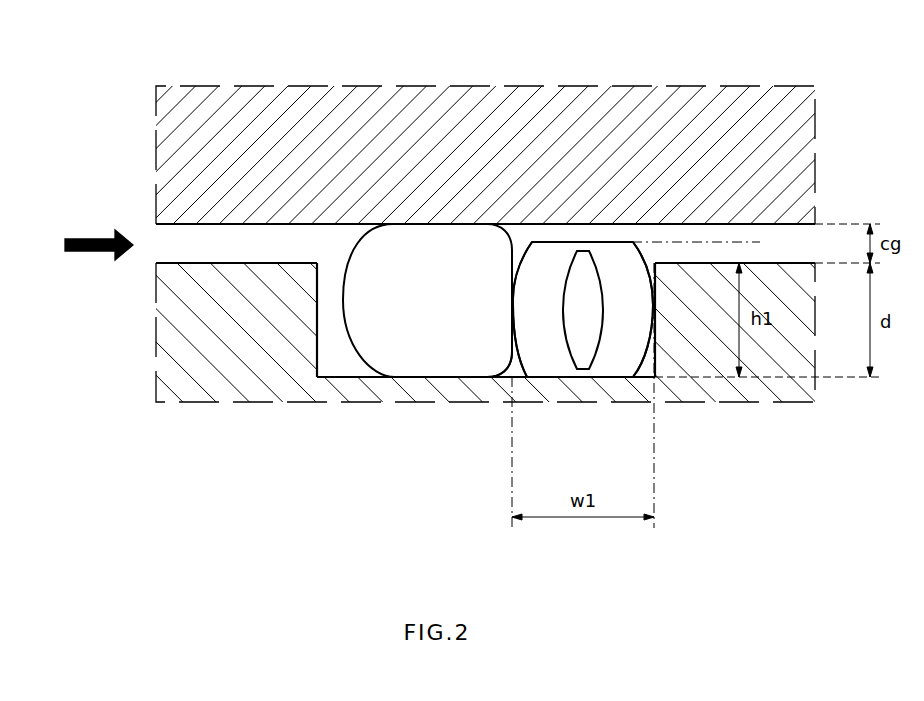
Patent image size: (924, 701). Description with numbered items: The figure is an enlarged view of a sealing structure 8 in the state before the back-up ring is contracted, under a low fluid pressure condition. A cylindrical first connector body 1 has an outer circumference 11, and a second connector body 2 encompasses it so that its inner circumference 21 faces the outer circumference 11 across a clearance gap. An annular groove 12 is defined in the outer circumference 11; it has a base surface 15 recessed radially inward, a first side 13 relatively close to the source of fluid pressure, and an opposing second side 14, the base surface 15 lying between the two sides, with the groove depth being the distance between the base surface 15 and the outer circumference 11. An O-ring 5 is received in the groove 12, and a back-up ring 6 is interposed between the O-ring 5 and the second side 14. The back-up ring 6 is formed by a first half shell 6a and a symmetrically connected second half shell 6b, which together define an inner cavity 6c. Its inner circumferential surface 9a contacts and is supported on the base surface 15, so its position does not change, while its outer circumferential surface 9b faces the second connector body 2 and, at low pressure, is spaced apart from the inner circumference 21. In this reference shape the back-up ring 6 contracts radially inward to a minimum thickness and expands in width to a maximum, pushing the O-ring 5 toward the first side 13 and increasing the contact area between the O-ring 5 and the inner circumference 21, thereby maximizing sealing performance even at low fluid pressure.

The first connector body 1 is at (755, 403).
The second connector body 2 is at (392, 95).
The O-ring 5 is at (428, 362).
The back-up ring 6 is at (542, 378).
The first half shell 6a is at (543, 255).
The second half shell 6b is at (613, 255).
The inner cavity 6c is at (589, 335).
The sealing structure 8 is at (447, 224).
The inner circumferential surface 9a is at (612, 378).
The outer circumferential surface 9b is at (583, 250).
The outer circumference 11 is at (195, 263).
The groove 12 is at (345, 362).
The first side 13 is at (319, 268).
The second side 14 is at (630, 258).
The base surface 15 is at (496, 374).
The inner circumference 21 is at (791, 228).